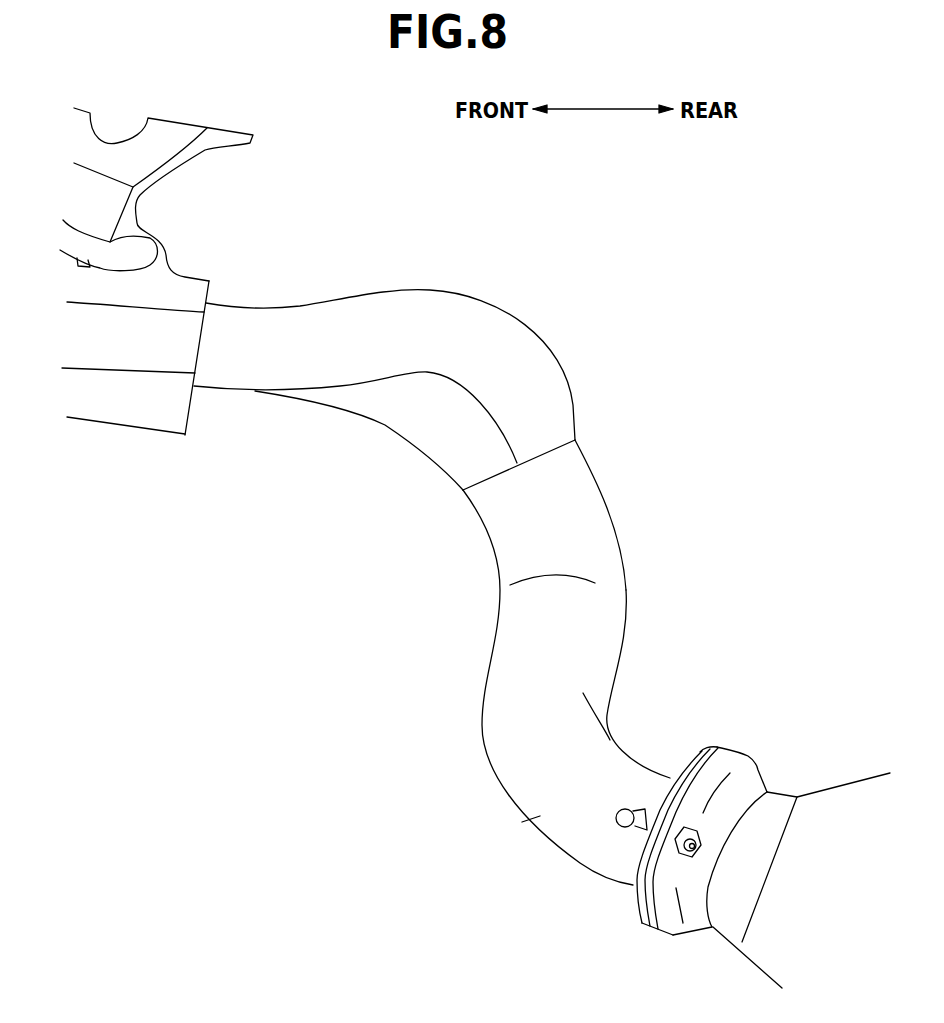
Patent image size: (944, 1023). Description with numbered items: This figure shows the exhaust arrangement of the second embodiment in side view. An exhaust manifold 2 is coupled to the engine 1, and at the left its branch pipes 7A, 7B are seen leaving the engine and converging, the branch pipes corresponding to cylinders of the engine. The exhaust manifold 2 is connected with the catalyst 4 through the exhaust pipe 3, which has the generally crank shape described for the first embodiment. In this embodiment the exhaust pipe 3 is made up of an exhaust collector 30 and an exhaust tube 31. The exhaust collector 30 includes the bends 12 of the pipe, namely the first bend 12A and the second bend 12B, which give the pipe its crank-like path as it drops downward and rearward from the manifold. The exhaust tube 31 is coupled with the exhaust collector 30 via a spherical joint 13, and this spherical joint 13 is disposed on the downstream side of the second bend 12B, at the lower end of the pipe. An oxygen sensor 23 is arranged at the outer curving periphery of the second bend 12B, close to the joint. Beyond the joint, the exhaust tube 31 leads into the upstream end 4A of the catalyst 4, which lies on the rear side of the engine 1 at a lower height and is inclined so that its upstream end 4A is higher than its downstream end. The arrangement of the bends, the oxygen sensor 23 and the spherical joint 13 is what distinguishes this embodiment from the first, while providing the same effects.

The engine 1 is at (150, 405).
The exhaust manifold 2 is at (384, 340).
The exhaust pipe 3 is at (551, 662).
The catalyst 4 is at (793, 869).
The upstream end 4A is at (742, 923).
The branch pipe 7A is at (265, 281).
The branch pipe 7B is at (330, 397).
The bend 12 is at (485, 697).
The first bend 12A is at (540, 575).
The second bend 12B is at (540, 815).
The spherical joint 13 is at (642, 923).
The oxygen sensor 23 is at (618, 830).
The exhaust collector 30 is at (573, 473).
The exhaust tube 31 is at (782, 762).